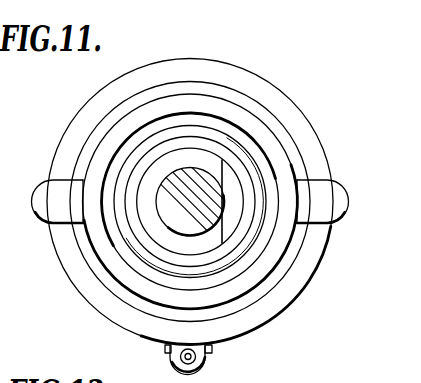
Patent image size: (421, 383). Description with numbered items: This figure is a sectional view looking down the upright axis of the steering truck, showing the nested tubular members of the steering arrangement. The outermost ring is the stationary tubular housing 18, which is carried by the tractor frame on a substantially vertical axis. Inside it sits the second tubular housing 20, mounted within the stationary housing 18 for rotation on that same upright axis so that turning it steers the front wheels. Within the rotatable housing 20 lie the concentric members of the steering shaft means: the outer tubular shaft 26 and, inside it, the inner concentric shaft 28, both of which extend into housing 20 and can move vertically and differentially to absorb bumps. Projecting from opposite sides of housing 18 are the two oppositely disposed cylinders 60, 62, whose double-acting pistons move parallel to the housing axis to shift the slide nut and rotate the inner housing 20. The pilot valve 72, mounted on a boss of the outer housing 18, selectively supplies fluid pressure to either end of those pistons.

The stationary tubular housing 18 is at (268, 81).
The second tubular housing 20 is at (241, 295).
The outer tubular shaft 26 is at (234, 173).
The inner concentric shaft 28 is at (167, 224).
The cylinder 60 is at (342, 216).
The cylinder 62 is at (38, 216).
The pilot valve 72 is at (212, 366).